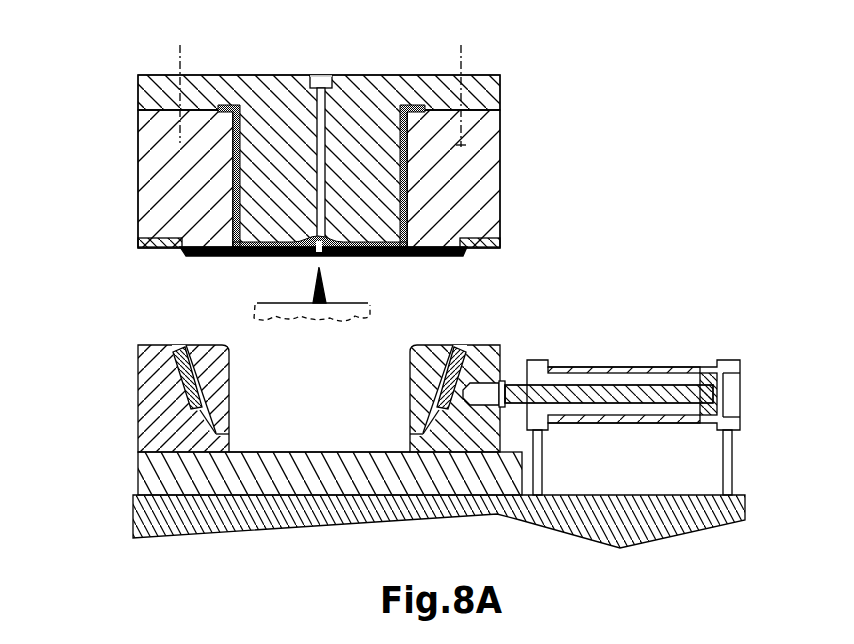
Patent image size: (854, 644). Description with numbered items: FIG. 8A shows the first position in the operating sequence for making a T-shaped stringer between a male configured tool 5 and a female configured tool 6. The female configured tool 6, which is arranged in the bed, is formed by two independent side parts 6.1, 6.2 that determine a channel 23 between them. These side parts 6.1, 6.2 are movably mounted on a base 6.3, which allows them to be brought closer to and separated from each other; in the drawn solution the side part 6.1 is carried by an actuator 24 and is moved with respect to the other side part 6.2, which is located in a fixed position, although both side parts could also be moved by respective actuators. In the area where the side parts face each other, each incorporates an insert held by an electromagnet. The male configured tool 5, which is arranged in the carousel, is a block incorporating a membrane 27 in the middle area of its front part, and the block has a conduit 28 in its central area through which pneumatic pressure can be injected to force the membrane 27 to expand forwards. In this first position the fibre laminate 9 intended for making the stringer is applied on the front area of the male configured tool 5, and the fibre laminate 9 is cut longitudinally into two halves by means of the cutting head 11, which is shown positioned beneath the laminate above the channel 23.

The male configured tool 5 is at (134, 152).
The conduit 28 is at (321, 112).
The membrane 27 is at (405, 165).
The fibre laminate 9 is at (387, 252).
The cutting head 11 is at (313, 290).
The actuator 24 is at (623, 368).
The channel 23 is at (303, 413).
The female configured tool 6 is at (131, 492).
The side part 6.1 is at (457, 430).
The side part 6.2 is at (158, 425).
The base 6.3 is at (226, 475).